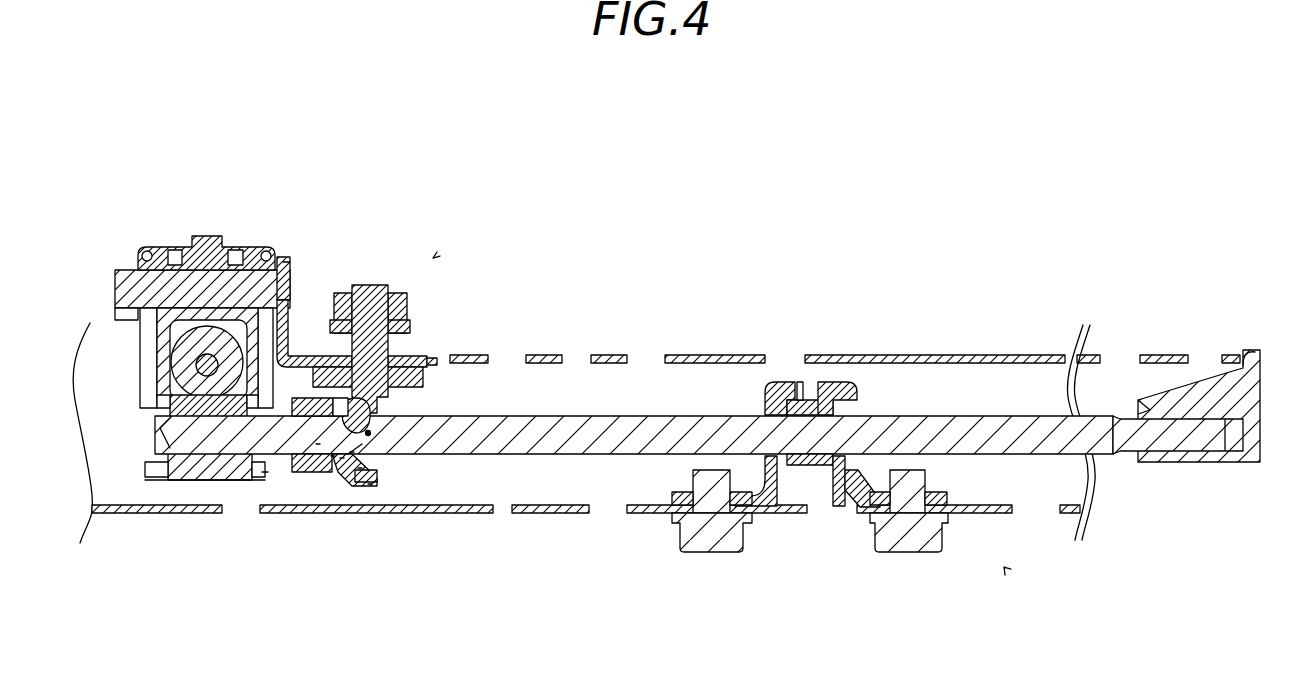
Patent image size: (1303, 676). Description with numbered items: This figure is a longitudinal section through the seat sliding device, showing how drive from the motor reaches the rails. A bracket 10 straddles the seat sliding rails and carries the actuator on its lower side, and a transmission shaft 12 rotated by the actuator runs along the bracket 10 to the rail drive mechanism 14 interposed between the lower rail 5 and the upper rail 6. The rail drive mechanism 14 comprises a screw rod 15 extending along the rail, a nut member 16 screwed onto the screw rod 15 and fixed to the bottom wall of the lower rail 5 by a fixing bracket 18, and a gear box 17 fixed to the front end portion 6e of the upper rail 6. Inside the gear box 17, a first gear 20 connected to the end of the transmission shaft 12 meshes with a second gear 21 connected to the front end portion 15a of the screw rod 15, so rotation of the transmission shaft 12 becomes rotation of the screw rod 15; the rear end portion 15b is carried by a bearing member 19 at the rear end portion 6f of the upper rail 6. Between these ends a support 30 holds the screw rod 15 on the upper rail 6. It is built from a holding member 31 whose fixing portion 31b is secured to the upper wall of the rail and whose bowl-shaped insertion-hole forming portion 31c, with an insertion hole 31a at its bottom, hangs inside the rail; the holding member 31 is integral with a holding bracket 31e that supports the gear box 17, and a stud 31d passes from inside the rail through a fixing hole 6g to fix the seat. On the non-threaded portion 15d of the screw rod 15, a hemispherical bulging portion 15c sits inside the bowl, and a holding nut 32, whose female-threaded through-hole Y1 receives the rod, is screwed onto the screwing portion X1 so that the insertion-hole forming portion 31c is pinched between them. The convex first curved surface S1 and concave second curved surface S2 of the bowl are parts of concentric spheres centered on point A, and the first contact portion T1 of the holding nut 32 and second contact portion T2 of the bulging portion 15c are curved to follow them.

The lower rail 5 is at (170, 514).
The upper rail 6 is at (936, 354).
The front end portion 6e is at (305, 356).
The rear end portion 6f is at (1238, 353).
The fixing hole 6g is at (380, 348).
The bracket 10 is at (152, 248).
The transmission shaft 12 is at (185, 345).
The rail drive mechanism 14 is at (1004, 567).
The screw rod 15 is at (532, 455).
The front end portion 15a is at (177, 430).
The rear end portion 15b is at (1210, 432).
The bulging portion 15c is at (362, 444).
The non-threaded portion 15d is at (262, 473).
The nut member 16 is at (810, 468).
The gear box 17 is at (262, 256).
The fixing bracket 18 is at (847, 507).
The bearing member 19 is at (1185, 463).
The first gear 20 is at (172, 397).
The second gear 21 is at (177, 461).
The support 30 is at (433, 258).
The holding member 31 is at (370, 312).
The insertion hole 31a is at (352, 424).
The fixing portion 31b is at (427, 374).
The insertion-hole forming portion 31c is at (368, 478).
The stud 31d is at (352, 302).
The holding bracket 31e is at (286, 262).
The holding nut 32 is at (310, 456).
The point A is at (372, 435).
The first curved surface S1 is at (360, 468).
The second curved surface S2 is at (370, 484).
The first contact portion T1 is at (333, 456).
The second contact portion T2 is at (352, 452).
The screwing portion X1 is at (318, 444).
The through-hole Y1 is at (342, 458).